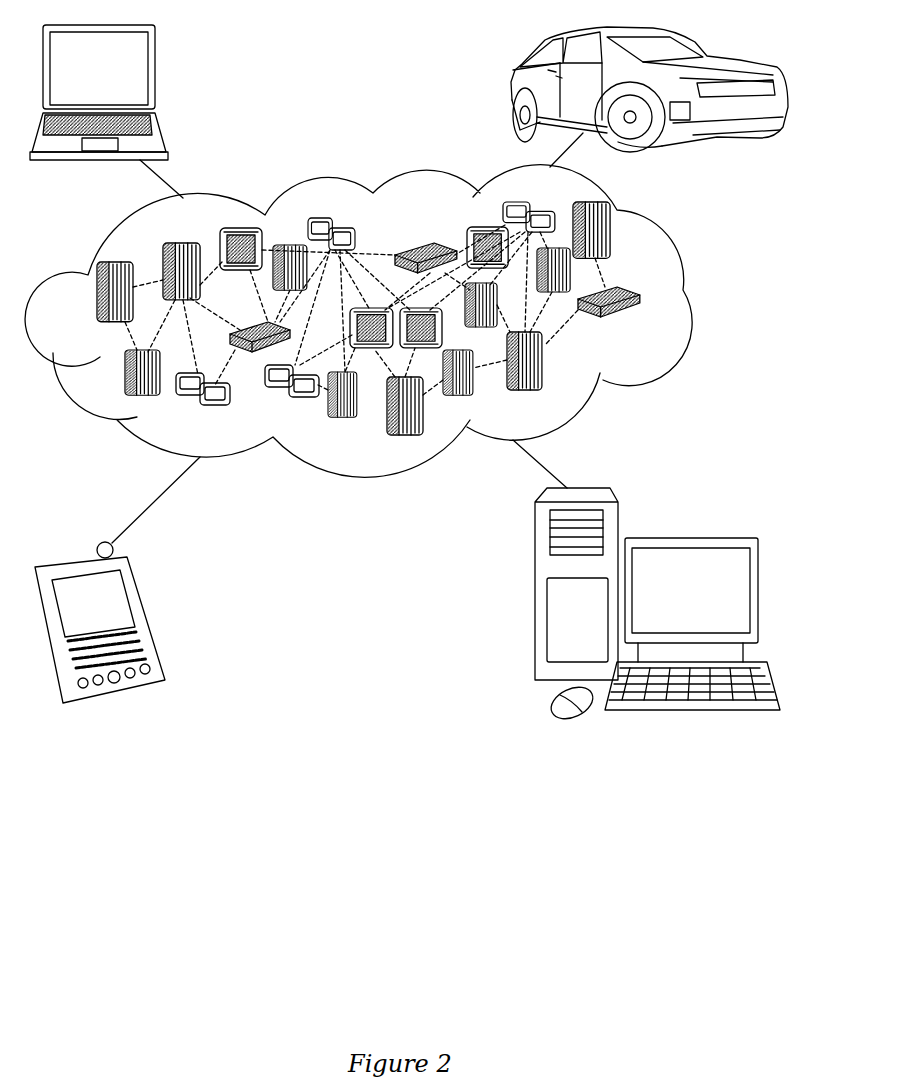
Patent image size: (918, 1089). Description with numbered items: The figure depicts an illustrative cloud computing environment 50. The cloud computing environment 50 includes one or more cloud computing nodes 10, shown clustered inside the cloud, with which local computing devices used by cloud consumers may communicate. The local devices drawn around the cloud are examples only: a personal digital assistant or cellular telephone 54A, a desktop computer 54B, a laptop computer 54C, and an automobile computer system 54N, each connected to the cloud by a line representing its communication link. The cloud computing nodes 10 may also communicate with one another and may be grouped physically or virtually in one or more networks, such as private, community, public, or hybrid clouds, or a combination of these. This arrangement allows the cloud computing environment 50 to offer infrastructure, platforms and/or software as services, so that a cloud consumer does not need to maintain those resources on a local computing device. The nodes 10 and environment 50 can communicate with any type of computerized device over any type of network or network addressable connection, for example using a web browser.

The cloud computing node 10 is at (643, 324).
The cloud computing environment 50 is at (690, 297).
The personal digital assistant (PDA) or cellular telephone 54A is at (146, 613).
The desktop computer 54B is at (688, 537).
The laptop computer 54C is at (157, 77).
The automobile computer system 54N is at (512, 92).